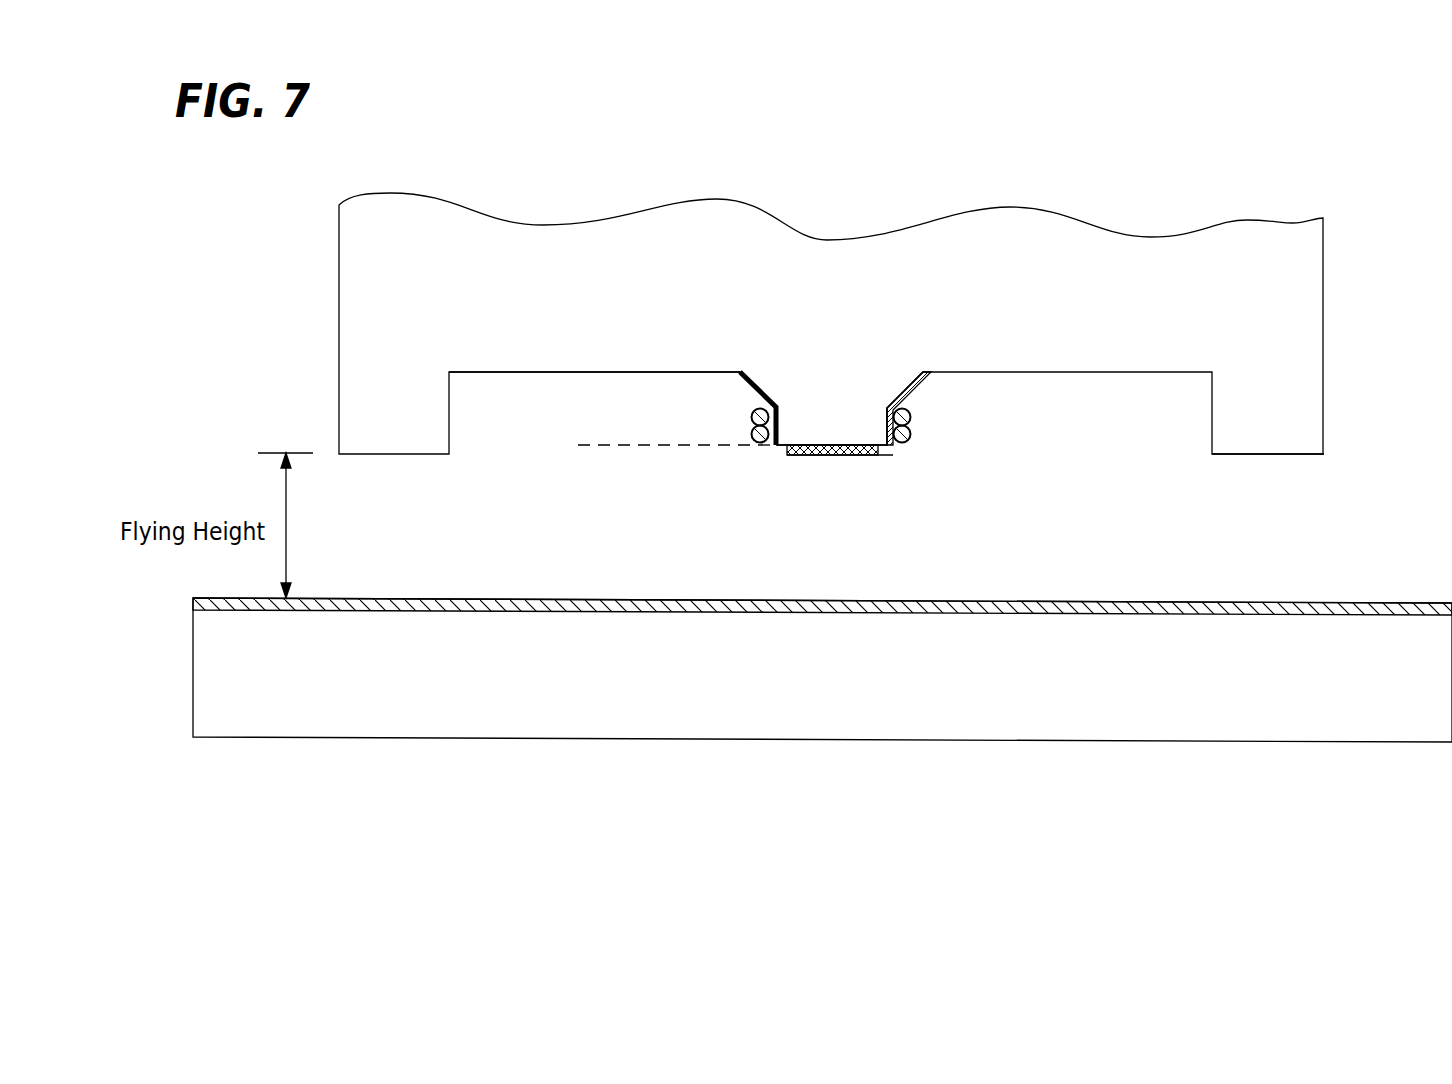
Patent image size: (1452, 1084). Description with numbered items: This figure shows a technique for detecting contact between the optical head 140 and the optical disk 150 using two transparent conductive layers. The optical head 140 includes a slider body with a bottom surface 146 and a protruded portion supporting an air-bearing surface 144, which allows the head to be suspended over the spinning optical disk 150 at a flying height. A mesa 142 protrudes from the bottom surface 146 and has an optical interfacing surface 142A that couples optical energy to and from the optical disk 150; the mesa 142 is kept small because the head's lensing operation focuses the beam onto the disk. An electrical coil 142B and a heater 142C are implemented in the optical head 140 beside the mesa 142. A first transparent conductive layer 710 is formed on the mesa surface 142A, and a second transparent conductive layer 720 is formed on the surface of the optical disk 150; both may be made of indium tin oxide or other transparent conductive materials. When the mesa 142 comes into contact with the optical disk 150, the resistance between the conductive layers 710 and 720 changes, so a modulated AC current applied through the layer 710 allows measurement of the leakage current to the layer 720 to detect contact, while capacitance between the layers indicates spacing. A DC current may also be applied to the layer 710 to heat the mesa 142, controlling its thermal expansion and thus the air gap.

The optical head 140 is at (852, 305).
The mesa 142 is at (850, 417).
The optical interfacing surface 142A is at (893, 456).
The electrical coil 142B is at (912, 416).
The heater 142C is at (743, 378).
The air-bearing surface 144 is at (1263, 455).
The bottom surface 146 is at (538, 372).
The optical disk 150 is at (850, 700).
The transparent conductive layer 710 is at (788, 456).
The transparent conductive layer 720 is at (1078, 614).